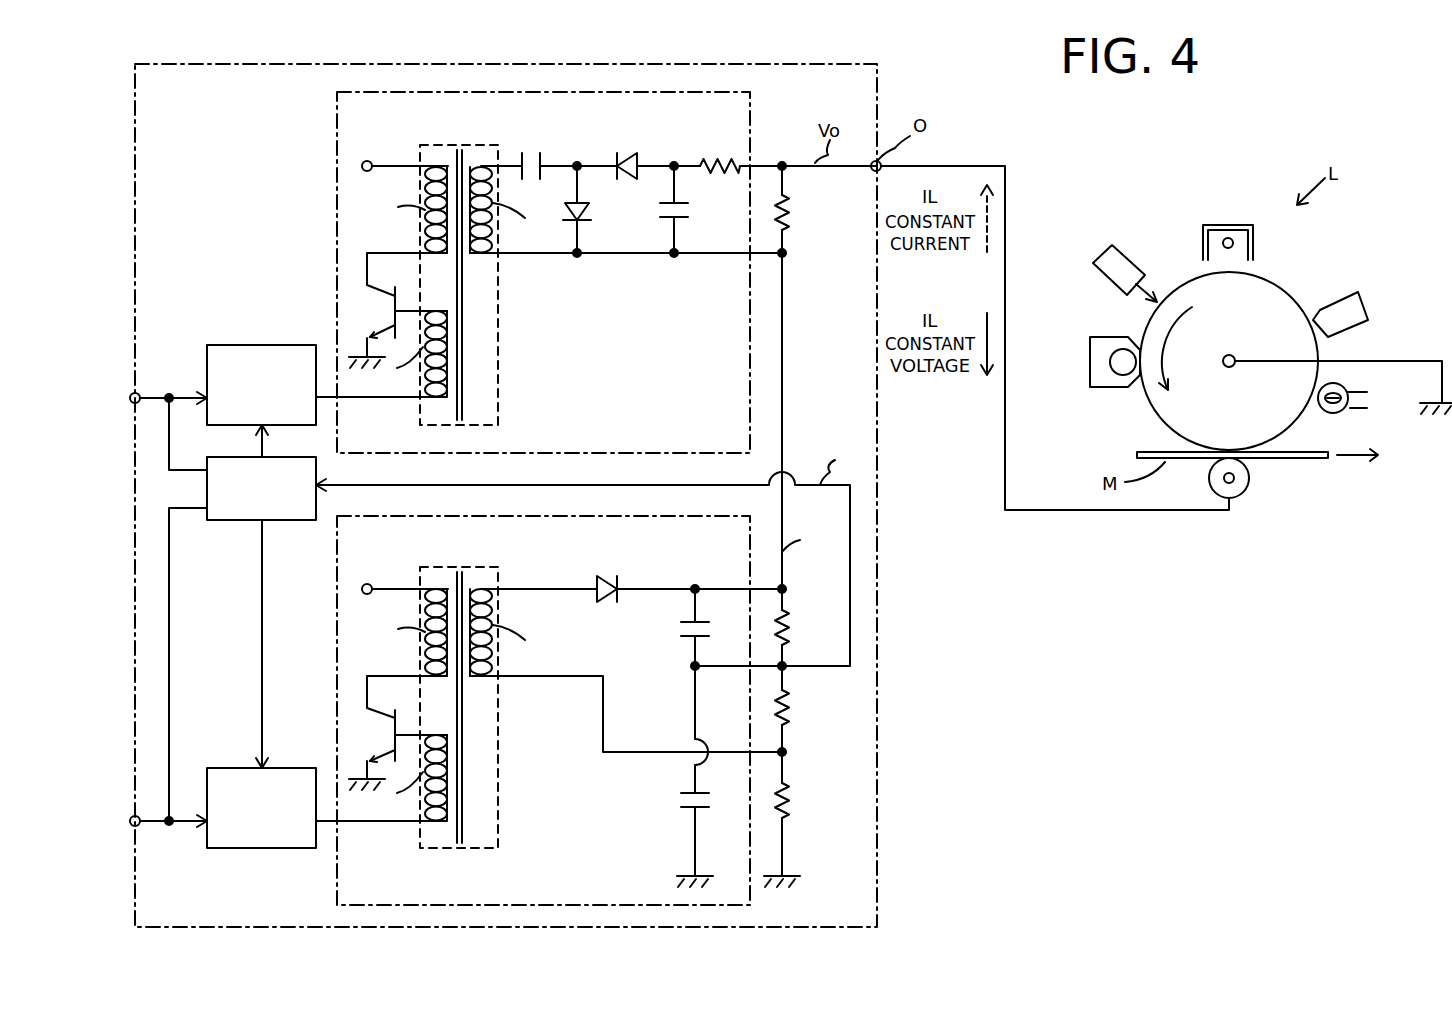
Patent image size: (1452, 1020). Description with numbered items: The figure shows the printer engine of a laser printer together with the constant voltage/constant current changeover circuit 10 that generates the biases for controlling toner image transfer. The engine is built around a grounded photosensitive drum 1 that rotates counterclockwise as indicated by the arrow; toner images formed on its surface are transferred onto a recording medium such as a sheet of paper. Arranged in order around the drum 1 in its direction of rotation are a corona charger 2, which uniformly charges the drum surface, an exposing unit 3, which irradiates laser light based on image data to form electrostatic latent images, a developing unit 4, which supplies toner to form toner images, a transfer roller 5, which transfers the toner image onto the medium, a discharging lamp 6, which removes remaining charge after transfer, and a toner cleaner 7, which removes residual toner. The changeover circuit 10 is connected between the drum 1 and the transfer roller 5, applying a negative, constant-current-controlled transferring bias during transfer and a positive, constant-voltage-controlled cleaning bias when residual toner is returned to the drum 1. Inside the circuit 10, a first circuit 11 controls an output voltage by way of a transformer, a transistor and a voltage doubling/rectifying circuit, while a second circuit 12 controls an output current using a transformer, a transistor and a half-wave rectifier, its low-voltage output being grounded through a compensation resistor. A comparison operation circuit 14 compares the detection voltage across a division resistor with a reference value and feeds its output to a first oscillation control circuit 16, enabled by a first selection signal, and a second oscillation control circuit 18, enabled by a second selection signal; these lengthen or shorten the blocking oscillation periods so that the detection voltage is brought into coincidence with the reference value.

The photosensitive drum 1 is at (1280, 290).
The corona charger 2 is at (1215, 220).
The exposing unit 3 is at (1112, 278).
The developing unit 4 is at (1120, 380).
The transfer roller 5 is at (1250, 480).
The discharging lamp 6 is at (1360, 410).
The toner cleaner 7 is at (1360, 305).
The constant voltage/constant current changeover circuit 10 is at (878, 625).
The first circuit 11 is at (337, 163).
The second circuit 12 is at (337, 645).
The comparison operation circuit 14 is at (238, 522).
The first oscillation control circuit 16 is at (272, 345).
The second oscillation control circuit 18 is at (283, 768).